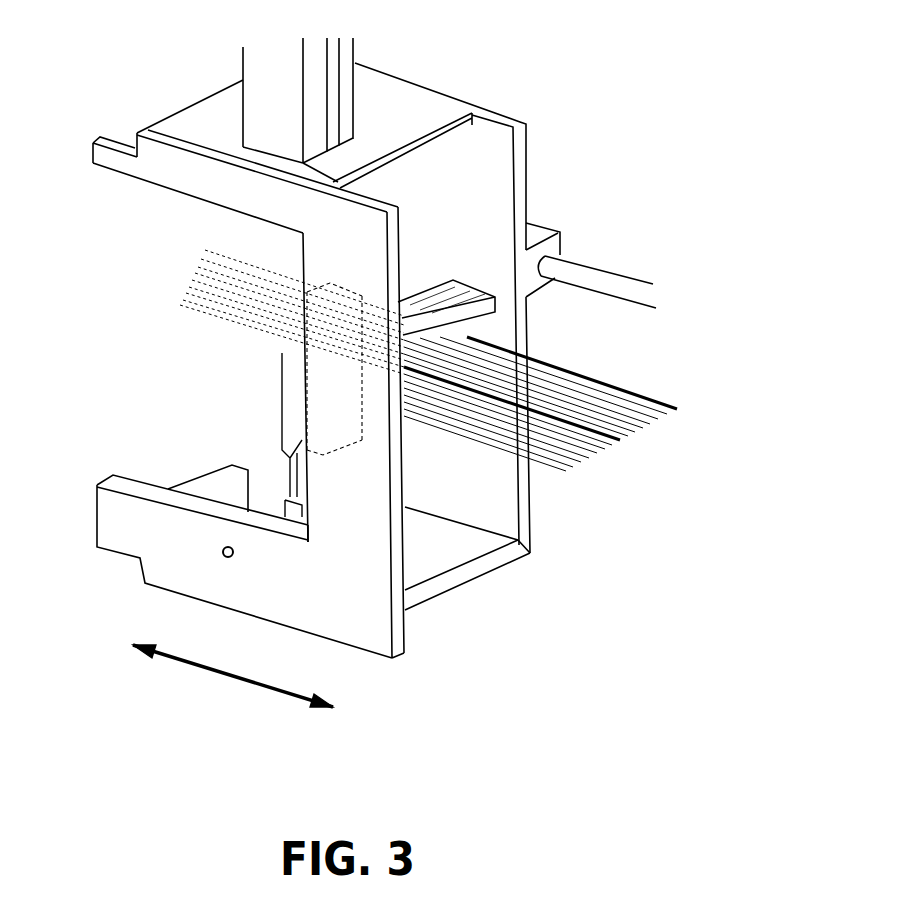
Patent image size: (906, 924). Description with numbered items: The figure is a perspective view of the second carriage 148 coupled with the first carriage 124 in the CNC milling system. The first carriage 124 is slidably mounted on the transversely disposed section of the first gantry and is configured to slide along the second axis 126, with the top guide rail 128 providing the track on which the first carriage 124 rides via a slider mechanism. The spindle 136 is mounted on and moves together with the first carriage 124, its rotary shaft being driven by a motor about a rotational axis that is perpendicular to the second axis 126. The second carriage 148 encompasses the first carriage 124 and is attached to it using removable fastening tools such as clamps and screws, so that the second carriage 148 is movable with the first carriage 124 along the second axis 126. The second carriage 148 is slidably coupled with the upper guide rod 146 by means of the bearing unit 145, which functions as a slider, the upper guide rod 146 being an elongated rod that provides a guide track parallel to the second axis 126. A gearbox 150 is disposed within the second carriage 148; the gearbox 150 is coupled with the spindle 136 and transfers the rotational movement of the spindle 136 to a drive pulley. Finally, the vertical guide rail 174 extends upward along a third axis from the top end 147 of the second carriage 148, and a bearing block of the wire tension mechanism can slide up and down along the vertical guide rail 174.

The first carriage 124 is at (453, 290).
The second axis 126 is at (208, 670).
The top guide rail 128 is at (607, 378).
The spindle 136 is at (280, 383).
The bearing unit 145 is at (562, 242).
The upper guide rod 146 is at (643, 285).
The top end 147 is at (428, 107).
The second carriage 148 is at (527, 163).
The gearbox 150 is at (87, 475).
The vertical guide rail 174 is at (243, 68).